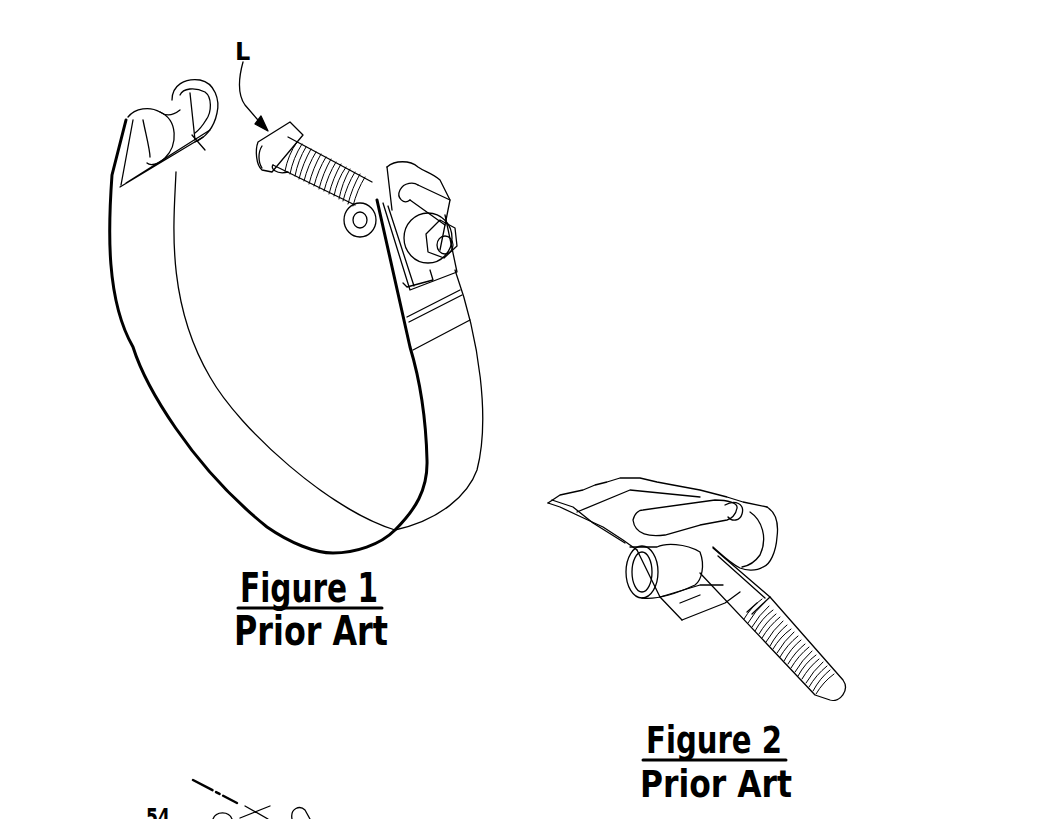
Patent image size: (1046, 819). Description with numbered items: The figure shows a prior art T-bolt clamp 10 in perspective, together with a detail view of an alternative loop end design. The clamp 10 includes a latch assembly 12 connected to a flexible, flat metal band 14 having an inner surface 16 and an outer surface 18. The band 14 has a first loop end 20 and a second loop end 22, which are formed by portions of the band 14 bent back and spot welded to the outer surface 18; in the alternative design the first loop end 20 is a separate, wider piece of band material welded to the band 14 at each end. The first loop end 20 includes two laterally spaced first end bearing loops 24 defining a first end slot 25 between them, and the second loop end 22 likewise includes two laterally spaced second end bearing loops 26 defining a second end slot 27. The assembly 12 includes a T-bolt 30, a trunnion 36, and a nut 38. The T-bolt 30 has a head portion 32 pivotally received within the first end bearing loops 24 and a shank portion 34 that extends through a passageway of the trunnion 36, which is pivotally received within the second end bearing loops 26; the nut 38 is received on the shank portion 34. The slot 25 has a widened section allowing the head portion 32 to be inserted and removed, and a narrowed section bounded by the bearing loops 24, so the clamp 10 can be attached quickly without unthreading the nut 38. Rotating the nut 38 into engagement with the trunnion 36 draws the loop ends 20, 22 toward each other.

In FIG. 1, the T-bolt clamp 10 is at (523, 150).
In FIG. 2, the T-bolt clamp 10 is at (790, 477).
In FIG. 1, the latch assembly 12 is at (337, 112).
In FIG. 1, the band 14 is at (187, 460).
In FIG. 2, the band 14 is at (623, 485).
In FIG. 1, the inner surface 16 is at (183, 407).
In FIG. 2, the inner surface 16 is at (708, 613).
In FIG. 1, the outer surface 18 is at (460, 412).
In FIG. 2, the outer surface 18 is at (663, 617).
In FIG. 1, the first loop end 20 is at (127, 117).
In FIG. 2, the first loop end 20 is at (727, 487).
In FIG. 1, the second loop end 22 is at (347, 250).
In FIG. 1, the first end bearing loops 24 is at (145, 108).
In FIG. 2, the first end bearing loops 24 is at (630, 590).
In FIG. 1, the first end slot 25 is at (195, 150).
In FIG. 2, the first end slot 25 is at (677, 523).
In FIG. 1, the second end bearing loops 26 is at (343, 210).
In FIG. 1, the second end slot 27 is at (390, 187).
In FIG. 1, the T-bolt 30 is at (347, 166).
In FIG. 2, the T-bolt 30 is at (830, 660).
In FIG. 1, the head portion 32 is at (283, 120).
In FIG. 2, the head portion 32 is at (767, 507).
In FIG. 1, the shank portion 34 is at (288, 172).
In FIG. 2, the shank portion 34 is at (795, 627).
In FIG. 1, the trunnion 36 is at (430, 190).
In FIG. 1, the nut 38 is at (463, 235).